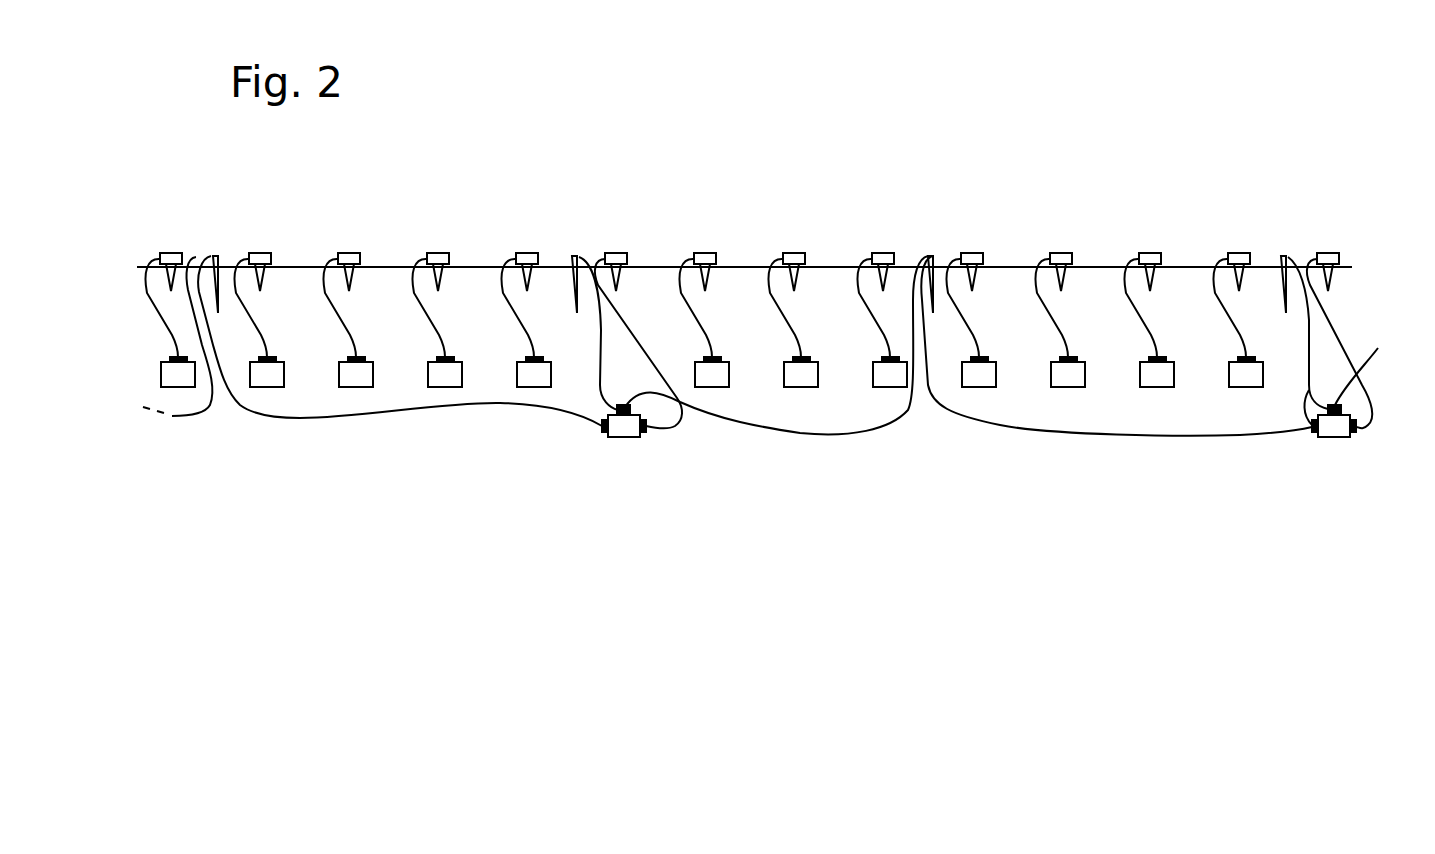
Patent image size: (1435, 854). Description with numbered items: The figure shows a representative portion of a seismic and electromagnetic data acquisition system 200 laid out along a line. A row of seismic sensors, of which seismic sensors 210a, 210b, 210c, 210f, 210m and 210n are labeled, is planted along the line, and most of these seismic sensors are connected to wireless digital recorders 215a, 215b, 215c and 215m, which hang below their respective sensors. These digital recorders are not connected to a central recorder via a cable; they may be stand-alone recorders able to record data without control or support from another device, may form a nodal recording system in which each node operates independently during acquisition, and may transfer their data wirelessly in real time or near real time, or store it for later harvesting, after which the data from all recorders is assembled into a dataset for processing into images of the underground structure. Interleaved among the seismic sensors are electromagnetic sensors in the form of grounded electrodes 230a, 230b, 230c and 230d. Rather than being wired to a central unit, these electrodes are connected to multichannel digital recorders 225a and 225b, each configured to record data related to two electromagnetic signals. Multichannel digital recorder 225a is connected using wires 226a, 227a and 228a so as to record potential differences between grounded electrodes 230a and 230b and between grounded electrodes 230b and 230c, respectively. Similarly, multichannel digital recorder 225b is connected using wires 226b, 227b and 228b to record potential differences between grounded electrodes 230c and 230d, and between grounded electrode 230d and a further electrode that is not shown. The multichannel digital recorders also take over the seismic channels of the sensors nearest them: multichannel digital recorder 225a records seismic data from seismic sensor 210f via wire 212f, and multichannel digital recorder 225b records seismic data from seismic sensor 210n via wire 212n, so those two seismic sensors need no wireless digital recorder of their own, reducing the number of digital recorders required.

The seismic and electromagnetic data acquisition system 200 is at (825, 201).
The seismic sensor 210a is at (172, 253).
The seismic sensor 210b is at (262, 254).
The seismic sensor 210c is at (351, 254).
The seismic sensor 210f is at (622, 254).
The seismic sensor 210m is at (1238, 253).
The seismic sensor 210n is at (1329, 254).
The wire 212f is at (630, 330).
The wire 212n is at (1404, 436).
The wireless digital recorder 215a is at (163, 377).
The wireless digital recorder 215b is at (284, 374).
The wireless digital recorder 215c is at (373, 374).
The wireless digital recorder 215m is at (1229, 378).
The multichannel digital recorder 225a is at (624, 437).
The multichannel digital recorder 225b is at (1333, 437).
The wire 226a is at (343, 419).
The wire 226b is at (1128, 433).
The wire 227a is at (599, 368).
The wire 227b is at (1305, 372).
The wire 228a is at (822, 435).
The wire 228b is at (1377, 363).
The grounded electrode 230a is at (218, 255).
The grounded electrode 230b is at (577, 256).
The grounded electrode 230c is at (933, 256).
The grounded electrode 230d is at (1286, 255).